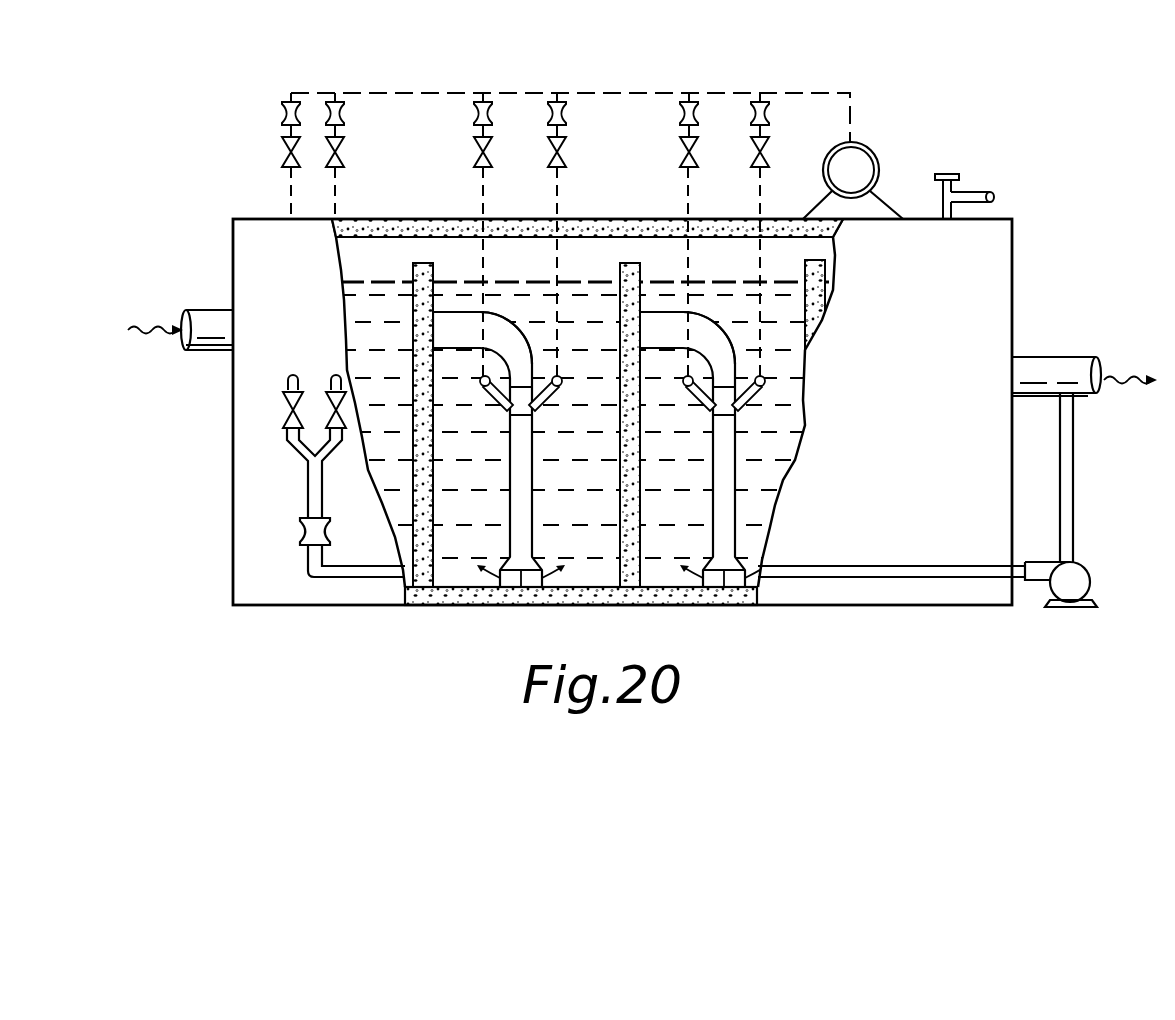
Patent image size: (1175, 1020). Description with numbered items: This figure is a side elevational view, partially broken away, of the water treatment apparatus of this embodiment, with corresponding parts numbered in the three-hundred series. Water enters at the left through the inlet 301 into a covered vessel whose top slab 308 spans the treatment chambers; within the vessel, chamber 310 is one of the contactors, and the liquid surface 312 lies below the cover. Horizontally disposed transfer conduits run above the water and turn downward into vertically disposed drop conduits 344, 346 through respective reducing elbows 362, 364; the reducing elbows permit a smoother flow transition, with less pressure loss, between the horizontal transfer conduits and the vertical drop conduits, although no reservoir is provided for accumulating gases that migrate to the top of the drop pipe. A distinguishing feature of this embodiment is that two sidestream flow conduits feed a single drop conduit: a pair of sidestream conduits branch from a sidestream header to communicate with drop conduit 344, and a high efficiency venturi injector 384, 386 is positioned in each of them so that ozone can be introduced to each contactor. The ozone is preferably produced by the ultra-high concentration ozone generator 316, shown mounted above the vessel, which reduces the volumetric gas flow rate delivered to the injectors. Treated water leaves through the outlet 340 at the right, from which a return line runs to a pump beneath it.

The inlet pipe 301 is at (207, 318).
The top cover slab 308 is at (370, 253).
The chamber 310 is at (580, 255).
The liquid surface 312 is at (708, 250).
The ultra-high concentration ozone generator 316 is at (873, 152).
The outlet pipe 340 is at (1046, 360).
The drop conduit 344 is at (528, 500).
The drop conduit 346 is at (735, 492).
The reducing elbow 362 is at (505, 327).
The reducing elbow 364 is at (705, 323).
The high efficiency venturi injector 384 is at (495, 397).
The high efficiency venturi injector 386 is at (548, 395).